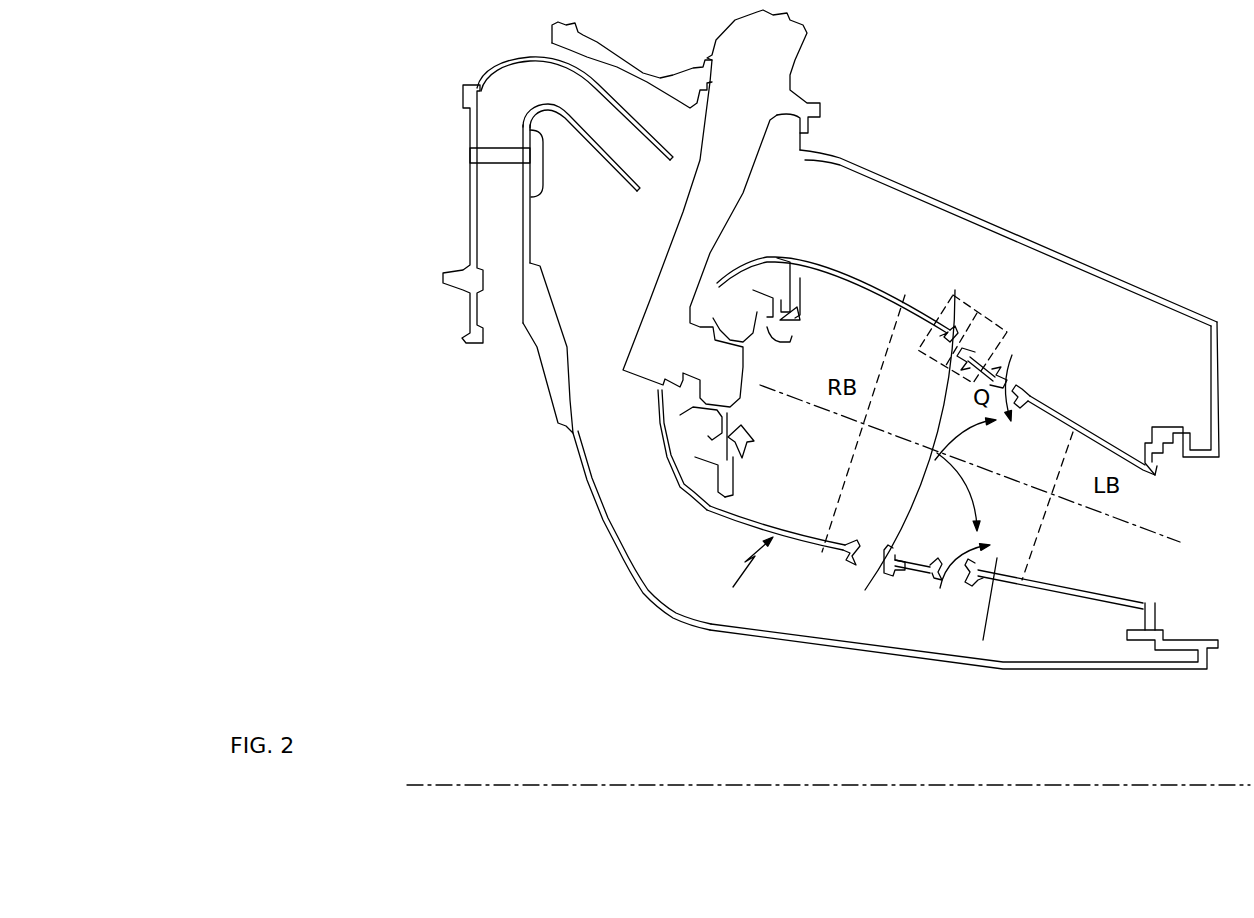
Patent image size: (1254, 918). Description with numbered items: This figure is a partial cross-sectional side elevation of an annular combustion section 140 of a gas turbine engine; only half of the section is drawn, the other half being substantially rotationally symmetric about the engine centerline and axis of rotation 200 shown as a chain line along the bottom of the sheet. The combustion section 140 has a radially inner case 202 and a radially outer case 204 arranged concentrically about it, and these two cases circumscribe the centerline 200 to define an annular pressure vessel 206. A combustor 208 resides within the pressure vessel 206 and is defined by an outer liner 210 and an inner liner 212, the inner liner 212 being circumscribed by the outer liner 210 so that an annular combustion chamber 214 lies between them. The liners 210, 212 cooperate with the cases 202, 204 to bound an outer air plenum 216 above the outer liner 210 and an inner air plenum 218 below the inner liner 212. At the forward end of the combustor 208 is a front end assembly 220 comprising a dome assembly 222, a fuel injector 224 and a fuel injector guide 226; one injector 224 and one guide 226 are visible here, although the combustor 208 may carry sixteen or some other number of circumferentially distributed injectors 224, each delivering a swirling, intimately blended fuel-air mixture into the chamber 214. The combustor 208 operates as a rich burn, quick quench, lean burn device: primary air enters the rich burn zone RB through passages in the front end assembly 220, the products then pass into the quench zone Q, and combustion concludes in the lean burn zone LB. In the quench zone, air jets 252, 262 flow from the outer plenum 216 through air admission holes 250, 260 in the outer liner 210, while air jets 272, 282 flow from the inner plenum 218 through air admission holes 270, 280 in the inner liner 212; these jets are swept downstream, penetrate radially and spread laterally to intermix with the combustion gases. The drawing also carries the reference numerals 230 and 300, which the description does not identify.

The combustion section 140 is at (395, 117).
The engine centerline and axis of rotation 200 is at (458, 785).
The radially inner case 202 is at (743, 636).
The radially outer case 204 is at (930, 196).
The annular pressure vessel 206 is at (643, 577).
The combustor 208 is at (738, 576).
The outer liner 210 is at (822, 266).
The inner liner 212 is at (833, 553).
The annular combustion chamber 214 is at (822, 477).
The outer air plenum 216 is at (1138, 339).
The inner air plenum 218 is at (707, 577).
The front end assembly 220 is at (643, 278).
The dome assembly 222 is at (657, 432).
The fuel injector 224 is at (641, 318).
The fuel injector guide 226 is at (753, 300).
The rotor centerline 230 is at (1145, 528).
The air admission hole 250 is at (974, 346).
The air jet 252 is at (937, 413).
The air admission hole 260 is at (1030, 386).
The air jet 262 is at (1012, 360).
The air admission hole 270 is at (889, 578).
The air jet 272 is at (892, 512).
The air admission hole 280 is at (957, 582).
The air jet 282 is at (950, 556).
The seal region 300 is at (980, 298).